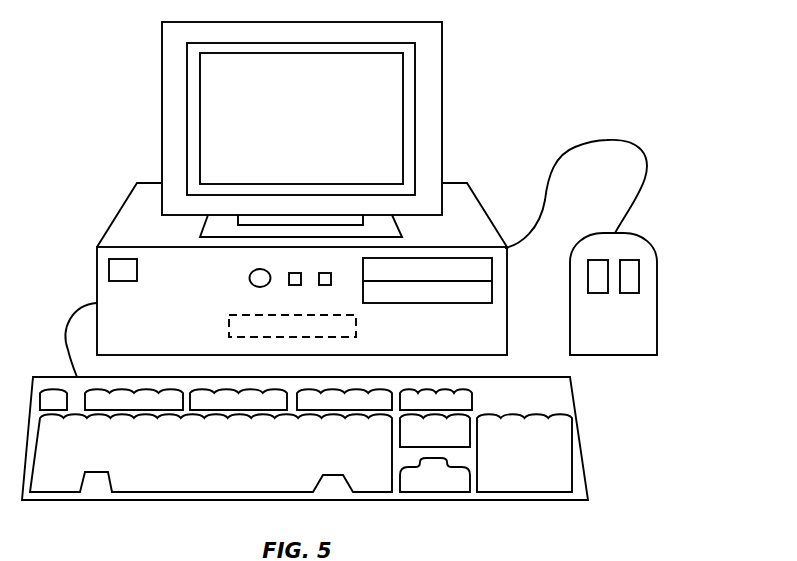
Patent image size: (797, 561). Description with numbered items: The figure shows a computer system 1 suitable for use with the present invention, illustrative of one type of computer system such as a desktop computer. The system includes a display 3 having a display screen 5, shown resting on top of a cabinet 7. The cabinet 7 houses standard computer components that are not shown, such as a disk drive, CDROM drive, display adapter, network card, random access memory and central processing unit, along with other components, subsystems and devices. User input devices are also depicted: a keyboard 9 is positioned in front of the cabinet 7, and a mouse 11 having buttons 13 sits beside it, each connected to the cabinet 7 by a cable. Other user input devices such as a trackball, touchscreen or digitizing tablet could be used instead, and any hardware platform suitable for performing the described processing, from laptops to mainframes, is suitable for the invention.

The computer system 1 is at (597, 70).
The display 3 is at (441, 117).
The display screen 5 is at (380, 110).
The cabinet 7 is at (458, 220).
The keyboard 9 is at (165, 503).
The mouse 11 is at (642, 322).
The buttons 13 is at (600, 258).